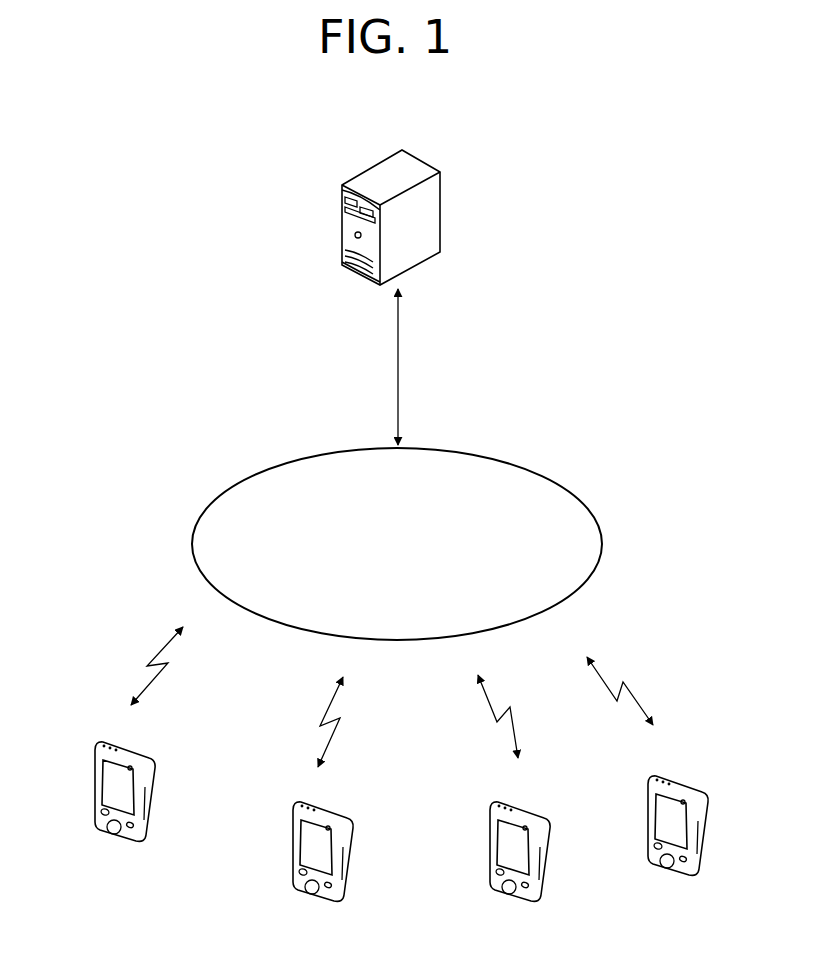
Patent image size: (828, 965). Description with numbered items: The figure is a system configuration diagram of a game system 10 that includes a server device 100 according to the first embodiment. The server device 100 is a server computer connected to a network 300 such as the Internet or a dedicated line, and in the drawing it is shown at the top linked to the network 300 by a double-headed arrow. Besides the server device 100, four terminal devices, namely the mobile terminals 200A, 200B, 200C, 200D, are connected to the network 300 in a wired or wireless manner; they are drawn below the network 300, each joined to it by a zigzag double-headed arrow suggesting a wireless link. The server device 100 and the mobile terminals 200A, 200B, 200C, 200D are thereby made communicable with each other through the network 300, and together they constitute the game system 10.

The game system 10 is at (565, 222).
The server device 100 is at (341, 195).
The mobile terminal 200A is at (97, 751).
The mobile terminal 200B is at (295, 811).
The mobile terminal 200C is at (492, 811).
The mobile terminal 200D is at (649, 786).
The network 300 is at (209, 505).